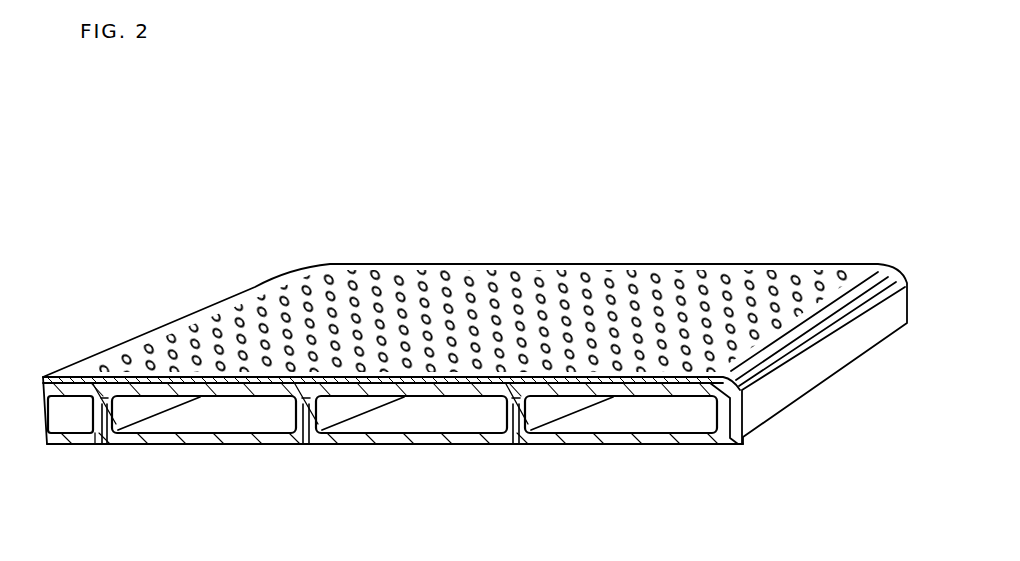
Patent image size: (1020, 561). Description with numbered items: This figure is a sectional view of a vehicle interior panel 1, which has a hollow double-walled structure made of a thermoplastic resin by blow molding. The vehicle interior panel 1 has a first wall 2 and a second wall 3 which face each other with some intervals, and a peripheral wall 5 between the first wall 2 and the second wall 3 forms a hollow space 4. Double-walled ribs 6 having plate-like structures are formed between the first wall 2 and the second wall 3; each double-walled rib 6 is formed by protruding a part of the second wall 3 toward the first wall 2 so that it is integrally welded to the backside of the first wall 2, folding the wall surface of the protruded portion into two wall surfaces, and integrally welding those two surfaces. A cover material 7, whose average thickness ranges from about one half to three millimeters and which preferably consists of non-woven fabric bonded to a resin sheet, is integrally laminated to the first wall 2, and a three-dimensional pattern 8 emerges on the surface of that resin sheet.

The vehicle interior panel 1 is at (562, 221).
The first wall 2 is at (467, 394).
The second wall 3 is at (388, 443).
The hollow space 4 is at (632, 410).
The peripheral wall 5 is at (827, 357).
The double-walled rib 6 is at (129, 410).
The cover material 7 is at (717, 278).
The three-dimensional pattern 8 is at (636, 285).